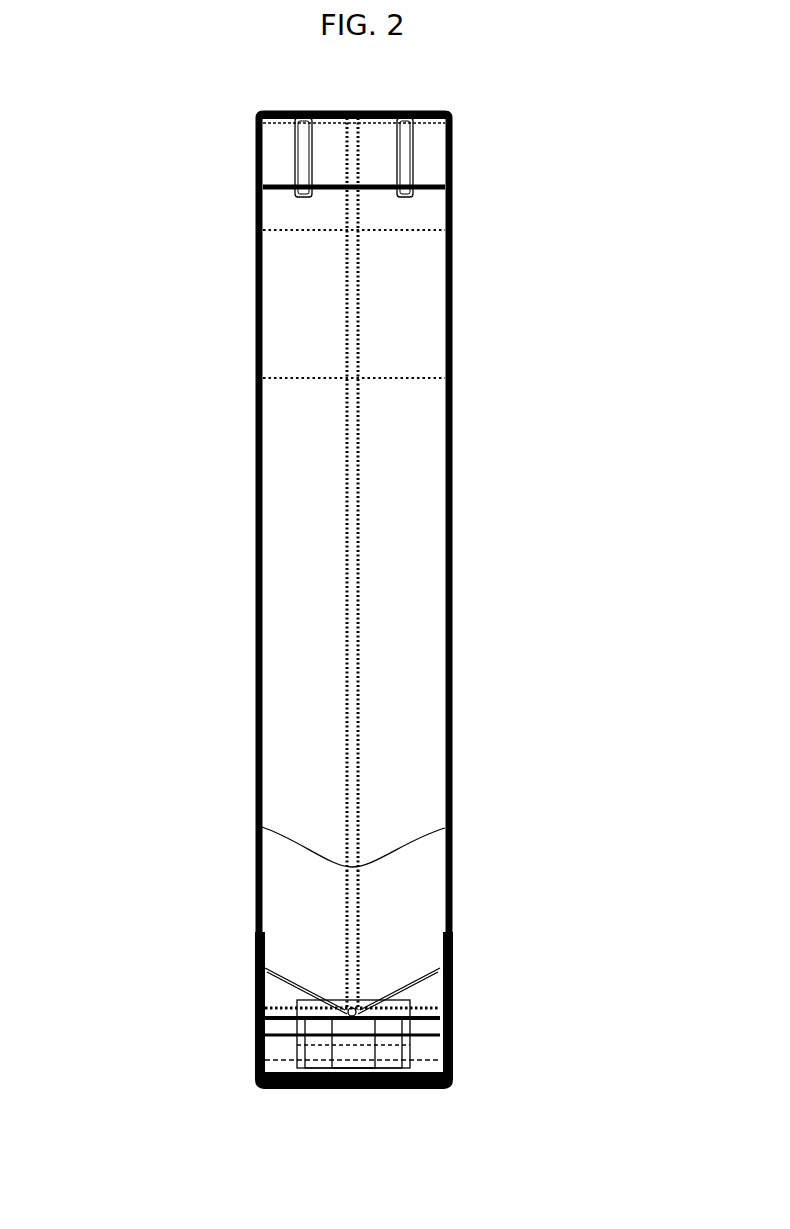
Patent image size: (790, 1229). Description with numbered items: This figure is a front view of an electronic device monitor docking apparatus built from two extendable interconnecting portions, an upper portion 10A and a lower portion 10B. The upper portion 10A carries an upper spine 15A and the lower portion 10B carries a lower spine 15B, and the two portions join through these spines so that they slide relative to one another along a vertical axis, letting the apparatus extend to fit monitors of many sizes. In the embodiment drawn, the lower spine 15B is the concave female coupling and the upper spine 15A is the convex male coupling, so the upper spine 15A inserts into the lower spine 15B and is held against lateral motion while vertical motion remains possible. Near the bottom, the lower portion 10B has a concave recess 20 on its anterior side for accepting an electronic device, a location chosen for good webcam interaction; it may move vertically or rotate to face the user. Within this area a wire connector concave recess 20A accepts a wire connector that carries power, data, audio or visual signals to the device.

The upper portion 10A is at (418, 473).
The lower portion 10B is at (418, 907).
The upper spine 15A is at (357, 214).
The lower spine 15B is at (343, 895).
The concave recess 20 is at (433, 997).
The wire connector concave recess 20A is at (355, 1050).